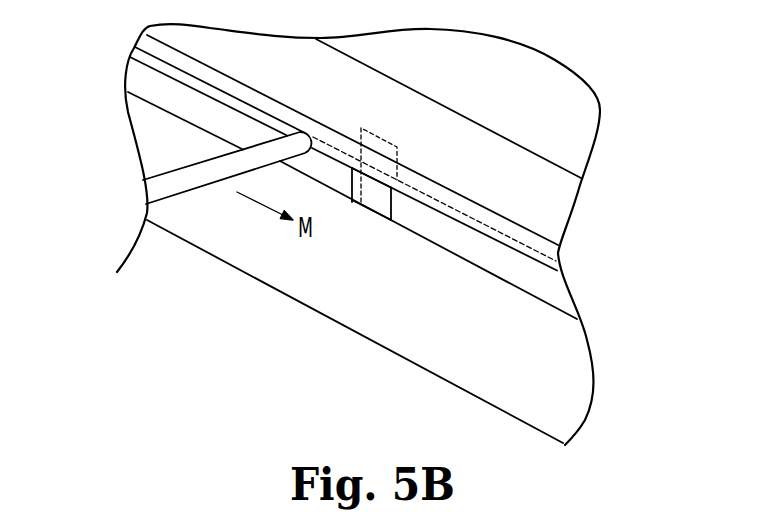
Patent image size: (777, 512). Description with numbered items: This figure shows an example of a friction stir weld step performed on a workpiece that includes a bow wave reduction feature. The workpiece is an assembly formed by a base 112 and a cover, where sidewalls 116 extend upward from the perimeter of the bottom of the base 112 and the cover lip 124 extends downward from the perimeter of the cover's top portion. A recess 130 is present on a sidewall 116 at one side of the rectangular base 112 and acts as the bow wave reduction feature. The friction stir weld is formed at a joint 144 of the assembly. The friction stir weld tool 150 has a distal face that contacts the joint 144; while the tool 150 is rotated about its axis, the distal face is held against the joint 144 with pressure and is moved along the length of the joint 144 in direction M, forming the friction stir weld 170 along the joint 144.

The base 112 is at (425, 318).
The sidewalls 116 is at (533, 282).
The cover lip 124 is at (543, 193).
The recess 130 is at (378, 192).
The joint 144 is at (493, 258).
The friction stir weld tool 150 is at (158, 187).
The friction stir weld 170 is at (189, 78).